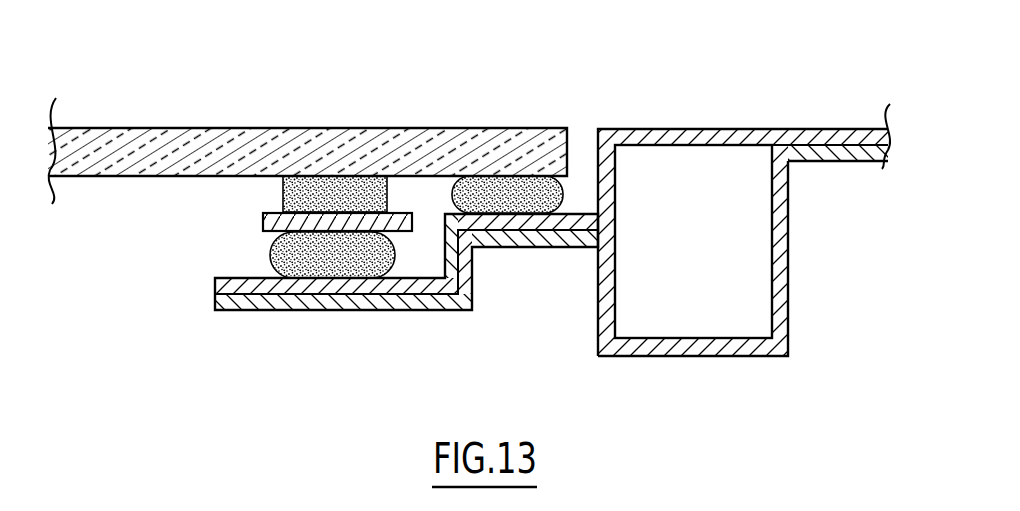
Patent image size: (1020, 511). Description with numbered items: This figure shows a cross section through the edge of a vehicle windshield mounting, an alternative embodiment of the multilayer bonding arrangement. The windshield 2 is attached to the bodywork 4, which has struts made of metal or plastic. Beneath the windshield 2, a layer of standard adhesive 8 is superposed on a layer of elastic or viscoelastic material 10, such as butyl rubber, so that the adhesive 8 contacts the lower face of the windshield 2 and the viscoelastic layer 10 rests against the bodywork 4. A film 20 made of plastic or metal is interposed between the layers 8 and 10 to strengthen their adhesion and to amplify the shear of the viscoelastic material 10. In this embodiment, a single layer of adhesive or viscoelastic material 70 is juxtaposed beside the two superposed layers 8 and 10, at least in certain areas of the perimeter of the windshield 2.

The windshield 2 is at (228, 142).
The bodywork 4 is at (700, 347).
The layer of standard adhesive 8 is at (305, 262).
The layer of elastic or viscoelastic material 10 is at (285, 188).
The film 20 is at (398, 213).
The layer of adhesive or of viscoelastic material 70 is at (522, 192).